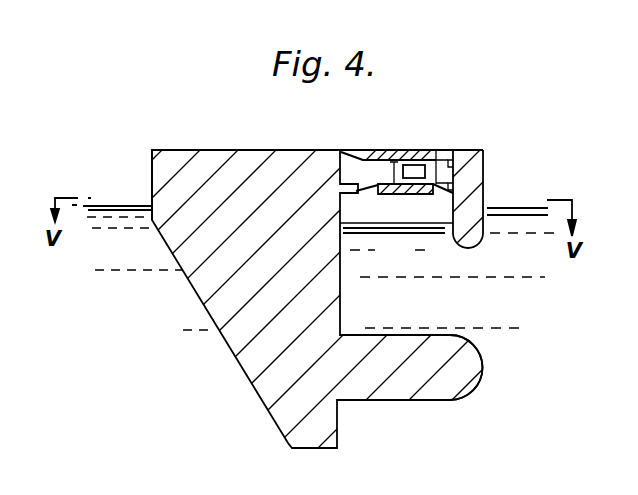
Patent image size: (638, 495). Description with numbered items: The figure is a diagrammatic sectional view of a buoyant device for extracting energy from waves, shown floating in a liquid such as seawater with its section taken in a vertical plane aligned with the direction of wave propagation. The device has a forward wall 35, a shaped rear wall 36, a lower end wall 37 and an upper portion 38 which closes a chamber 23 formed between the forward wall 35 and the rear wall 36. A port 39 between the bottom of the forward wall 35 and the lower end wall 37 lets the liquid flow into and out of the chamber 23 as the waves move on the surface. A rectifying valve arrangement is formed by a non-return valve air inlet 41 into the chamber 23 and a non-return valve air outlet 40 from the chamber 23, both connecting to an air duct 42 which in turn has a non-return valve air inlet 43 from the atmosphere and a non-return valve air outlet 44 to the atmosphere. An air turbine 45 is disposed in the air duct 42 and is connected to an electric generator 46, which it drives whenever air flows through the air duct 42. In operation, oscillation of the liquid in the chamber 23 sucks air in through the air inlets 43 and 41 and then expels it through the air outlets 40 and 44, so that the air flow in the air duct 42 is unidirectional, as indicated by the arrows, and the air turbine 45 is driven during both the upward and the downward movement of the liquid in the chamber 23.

The chamber 23 is at (390, 299).
The forward wall 35 is at (478, 190).
The shaped rear wall 36 is at (222, 268).
The lower end wall 37 is at (463, 368).
The upper portion 38 is at (152, 172).
The port 39 is at (470, 299).
The non-return valve air outlet 40 is at (373, 191).
The non-return valve air inlet 41 is at (443, 200).
The air duct 42 is at (432, 170).
The non-return valve air inlet 43 is at (355, 158).
The non-return valve air outlet 44 is at (437, 160).
The air turbine 45 is at (393, 163).
The electric generator 46 is at (411, 167).